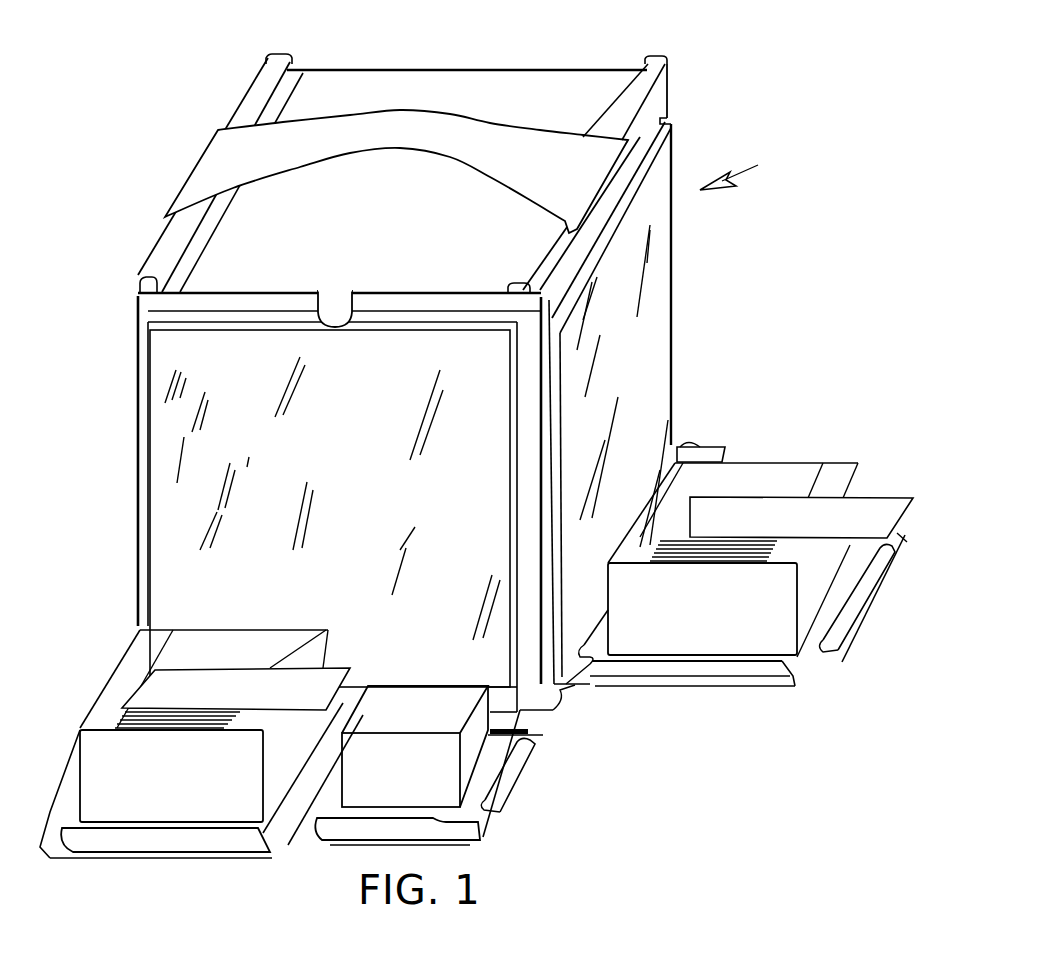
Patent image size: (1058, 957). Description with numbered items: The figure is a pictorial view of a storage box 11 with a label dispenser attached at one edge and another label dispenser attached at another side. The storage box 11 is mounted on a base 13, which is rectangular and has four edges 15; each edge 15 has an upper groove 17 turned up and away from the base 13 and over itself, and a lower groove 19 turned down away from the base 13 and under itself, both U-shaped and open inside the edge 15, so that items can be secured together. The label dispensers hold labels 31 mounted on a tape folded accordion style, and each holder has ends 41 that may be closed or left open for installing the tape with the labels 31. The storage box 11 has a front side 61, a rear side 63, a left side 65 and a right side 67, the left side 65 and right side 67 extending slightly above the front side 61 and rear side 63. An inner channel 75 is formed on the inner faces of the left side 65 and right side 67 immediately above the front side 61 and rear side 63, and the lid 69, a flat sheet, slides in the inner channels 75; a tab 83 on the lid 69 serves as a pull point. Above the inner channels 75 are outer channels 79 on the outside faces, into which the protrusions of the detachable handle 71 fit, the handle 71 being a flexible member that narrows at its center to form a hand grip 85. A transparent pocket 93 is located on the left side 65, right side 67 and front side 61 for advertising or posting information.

The storage box 11 is at (748, 166).
The base 13 is at (558, 722).
The edges 15 is at (710, 447).
The upper groove 17 is at (875, 572).
The lower groove 19 is at (145, 855).
The labels 31 is at (170, 690).
The ends 41 is at (755, 625).
The front side 61 is at (138, 320).
The rear side 63 is at (590, 70).
The left side 65 is at (138, 405).
The right side 67 is at (672, 100).
The lid 69 is at (445, 95).
The handle 71 is at (496, 140).
The inner channel 75 is at (138, 301).
The outer channels 79 is at (146, 284).
The tab 83 is at (328, 305).
The hand grip 85 is at (350, 135).
The pocket 93 is at (375, 416).